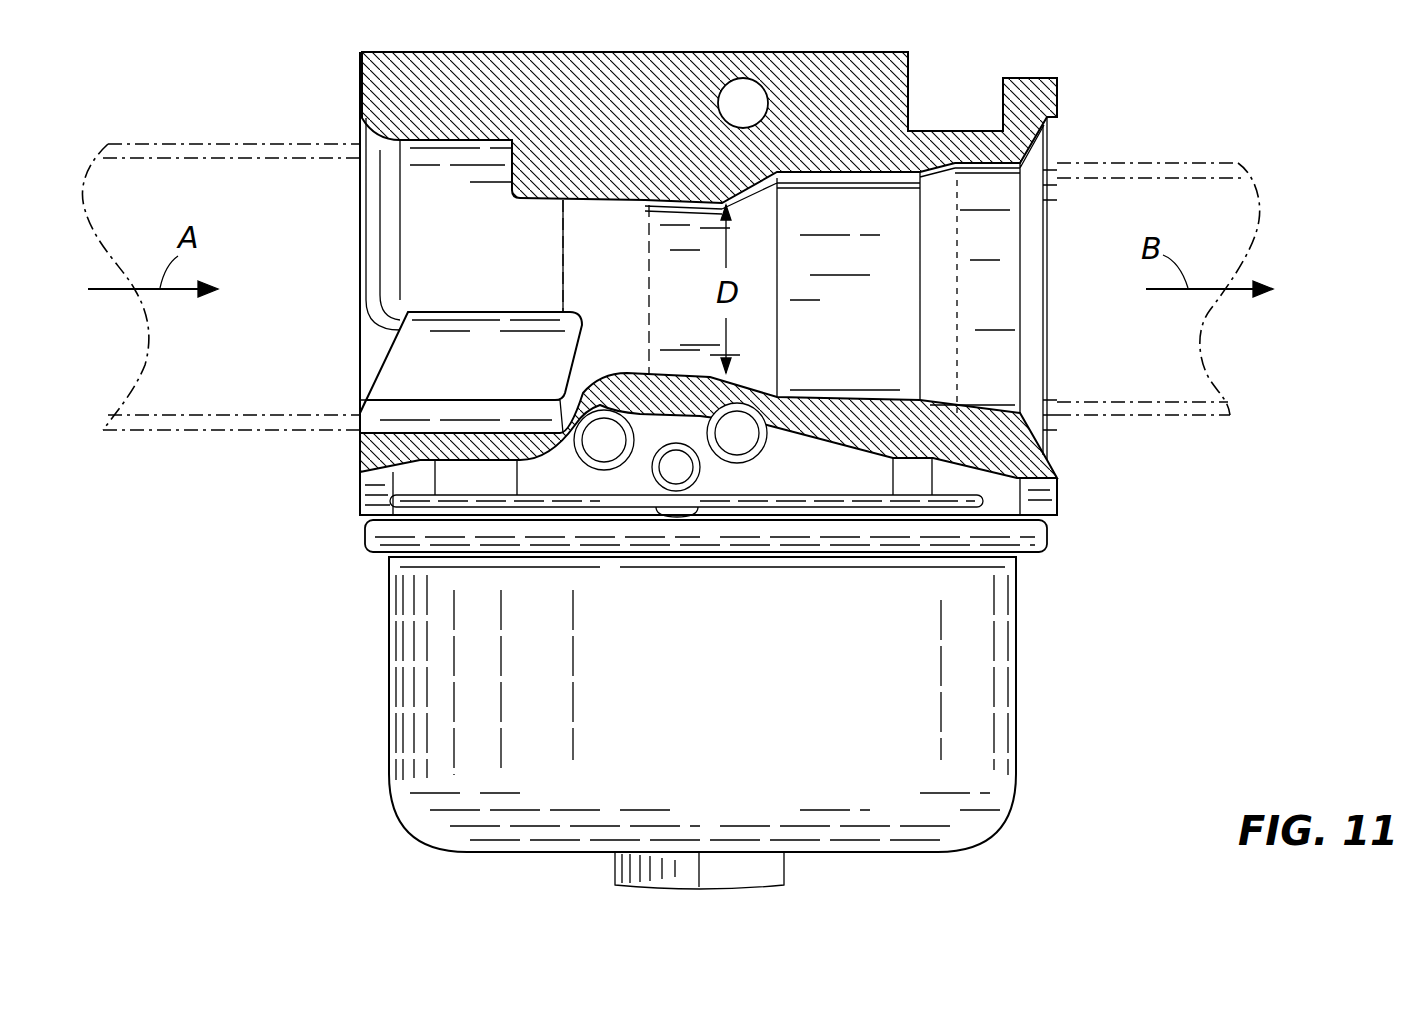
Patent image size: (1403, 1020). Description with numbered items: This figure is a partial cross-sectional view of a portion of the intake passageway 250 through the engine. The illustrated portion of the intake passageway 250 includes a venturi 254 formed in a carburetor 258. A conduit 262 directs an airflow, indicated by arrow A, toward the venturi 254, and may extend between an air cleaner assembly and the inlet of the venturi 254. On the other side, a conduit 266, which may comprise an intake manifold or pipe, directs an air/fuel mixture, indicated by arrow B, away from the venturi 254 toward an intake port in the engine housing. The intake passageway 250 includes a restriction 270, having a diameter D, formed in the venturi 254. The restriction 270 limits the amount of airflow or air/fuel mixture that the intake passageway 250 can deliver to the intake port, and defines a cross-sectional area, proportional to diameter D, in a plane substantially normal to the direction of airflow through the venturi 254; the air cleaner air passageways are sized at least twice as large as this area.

The intake passageway 250 is at (223, 180).
The venturi 254 is at (828, 180).
The carburetor 258 is at (929, 650).
The conduit 262 is at (268, 430).
The conduit 266 is at (1143, 415).
The restriction 270 is at (640, 205).